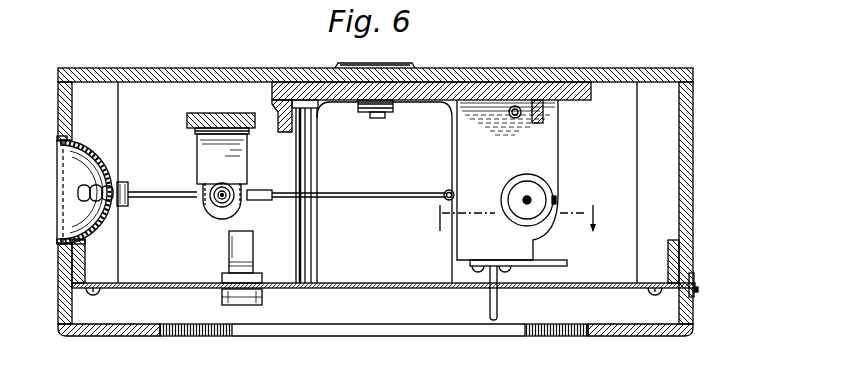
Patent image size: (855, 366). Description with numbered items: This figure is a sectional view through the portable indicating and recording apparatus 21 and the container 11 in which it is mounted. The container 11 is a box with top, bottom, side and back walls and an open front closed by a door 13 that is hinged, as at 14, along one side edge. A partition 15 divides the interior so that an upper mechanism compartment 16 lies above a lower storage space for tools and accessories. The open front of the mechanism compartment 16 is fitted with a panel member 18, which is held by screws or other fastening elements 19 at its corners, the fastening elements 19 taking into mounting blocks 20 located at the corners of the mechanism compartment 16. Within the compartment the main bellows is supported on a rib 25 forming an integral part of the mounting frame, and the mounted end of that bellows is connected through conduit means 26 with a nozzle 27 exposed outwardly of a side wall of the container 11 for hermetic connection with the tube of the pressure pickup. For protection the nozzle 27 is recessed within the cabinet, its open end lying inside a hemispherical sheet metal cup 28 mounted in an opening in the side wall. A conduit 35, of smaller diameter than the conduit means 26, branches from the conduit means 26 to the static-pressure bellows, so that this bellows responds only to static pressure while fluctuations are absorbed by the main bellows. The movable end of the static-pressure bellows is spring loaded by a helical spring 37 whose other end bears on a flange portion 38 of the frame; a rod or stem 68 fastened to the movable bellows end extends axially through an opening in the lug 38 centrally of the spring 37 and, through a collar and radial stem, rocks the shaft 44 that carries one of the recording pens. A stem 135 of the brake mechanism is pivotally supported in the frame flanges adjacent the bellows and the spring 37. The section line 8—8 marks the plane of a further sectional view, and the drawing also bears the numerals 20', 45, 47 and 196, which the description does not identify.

The section line 8- 8 is at (518, 218).
The container 11 is at (694, 88).
The door 13 is at (624, 337).
The hinge 14 is at (698, 290).
The partition 15 is at (350, 272).
The mechanism compartment 16 is at (147, 271).
The panel member 18 is at (190, 287).
The fastening elements 19 is at (97, 289).
The mounting blocks 20 is at (372, 203).
The post 20' is at (372, 191).
The indicating and recording apparatus 21 is at (613, 101).
The rib 25 is at (244, 167).
The conduit means 26 is at (168, 190).
The nozzle 27 is at (76, 186).
The hemispherical sheet metal cup 28 is at (102, 152).
The conduit 35 is at (384, 194).
The helical spring 37 is at (551, 190).
The flange portion 38 is at (460, 166).
The shaft 44 is at (490, 307).
The bottom section 45 is at (230, 326).
The plunger 47 is at (262, 298).
The rod or stem 68 is at (524, 199).
The stem 135 is at (514, 106).
The lug 196 is at (395, 68).